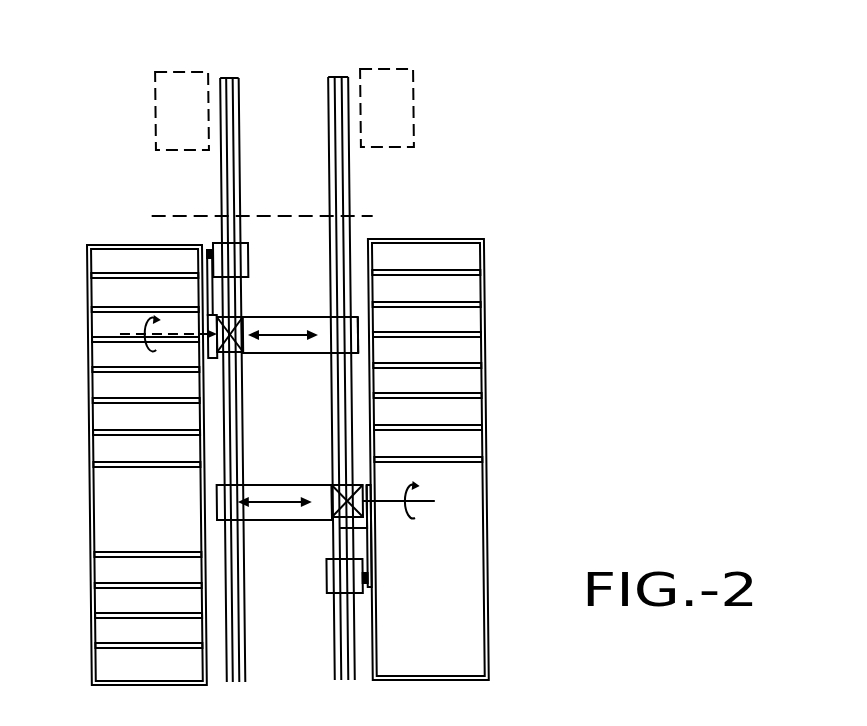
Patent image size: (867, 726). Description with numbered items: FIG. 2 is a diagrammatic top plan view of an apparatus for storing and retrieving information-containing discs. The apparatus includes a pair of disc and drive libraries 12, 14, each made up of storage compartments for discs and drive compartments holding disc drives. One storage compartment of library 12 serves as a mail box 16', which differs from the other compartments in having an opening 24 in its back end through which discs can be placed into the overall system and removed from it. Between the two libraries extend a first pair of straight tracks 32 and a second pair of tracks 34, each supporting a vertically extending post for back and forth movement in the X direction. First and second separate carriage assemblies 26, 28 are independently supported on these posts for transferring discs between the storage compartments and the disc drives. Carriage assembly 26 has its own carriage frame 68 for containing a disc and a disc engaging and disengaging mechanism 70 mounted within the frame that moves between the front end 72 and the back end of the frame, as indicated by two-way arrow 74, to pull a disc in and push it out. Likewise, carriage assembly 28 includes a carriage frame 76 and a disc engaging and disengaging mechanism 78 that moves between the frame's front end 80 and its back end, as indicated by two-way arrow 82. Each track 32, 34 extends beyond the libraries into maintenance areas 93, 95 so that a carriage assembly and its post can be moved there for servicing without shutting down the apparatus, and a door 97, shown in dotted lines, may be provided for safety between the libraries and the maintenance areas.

The disc and drive library 12 is at (427, 213).
The disc and drive library 14 is at (107, 238).
The mail box 16' is at (471, 394).
The opening 24 is at (484, 416).
The first carriage assembly 26 is at (260, 483).
The second carriage assembly 28 is at (304, 308).
The tracks 32 is at (331, 90).
The tracks 34 is at (242, 97).
The carriage frame 68 is at (260, 522).
The disc engaging and disengaging mechanism 70 is at (340, 515).
The front end 72 is at (214, 502).
The two-way arrow 74 is at (278, 502).
The carriage frame 76 is at (263, 355).
The disc engaging and disengaging mechanism 78 is at (214, 334).
The front end 80 is at (357, 330).
The two-way arrow 82 is at (282, 331).
The maintenance area 93 is at (406, 90).
The maintenance area 95 is at (176, 102).
The door 97 is at (284, 214).